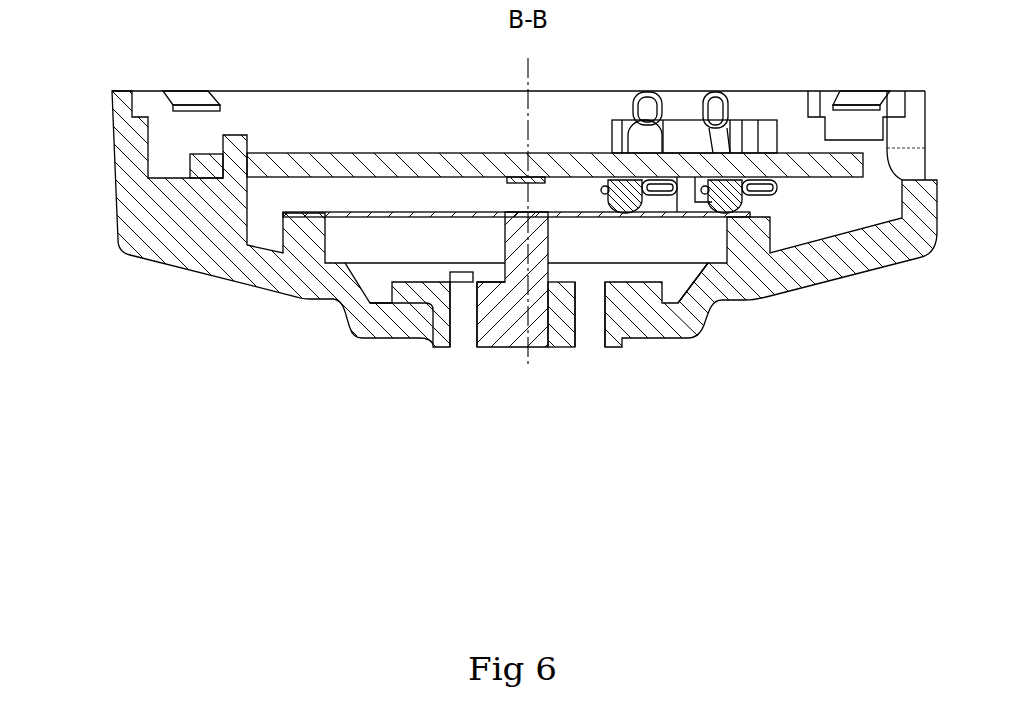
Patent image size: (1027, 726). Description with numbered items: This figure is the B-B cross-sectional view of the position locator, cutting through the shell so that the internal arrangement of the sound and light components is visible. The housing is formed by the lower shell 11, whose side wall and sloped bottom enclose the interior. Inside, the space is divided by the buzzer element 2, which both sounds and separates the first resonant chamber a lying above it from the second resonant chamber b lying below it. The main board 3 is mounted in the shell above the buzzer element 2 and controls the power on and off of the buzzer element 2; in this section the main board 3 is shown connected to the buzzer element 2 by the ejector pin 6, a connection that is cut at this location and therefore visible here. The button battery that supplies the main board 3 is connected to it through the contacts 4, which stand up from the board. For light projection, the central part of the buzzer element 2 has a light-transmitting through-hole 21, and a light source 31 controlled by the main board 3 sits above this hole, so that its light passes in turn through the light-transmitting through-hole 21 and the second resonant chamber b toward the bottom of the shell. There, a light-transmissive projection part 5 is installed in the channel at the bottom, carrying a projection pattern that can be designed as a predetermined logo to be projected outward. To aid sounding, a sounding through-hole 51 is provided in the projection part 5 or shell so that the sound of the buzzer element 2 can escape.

The lower shell 11 is at (140, 193).
The buzzer element 2 is at (403, 216).
The light-transmitting through-hole 21 is at (552, 215).
The main board 3 is at (378, 162).
The light source 31 is at (522, 172).
The contacts 4 is at (651, 90).
The projection part 5 is at (502, 343).
The sounding through-hole 51 is at (583, 330).
The ejector pin 6 is at (723, 202).
The first resonant chamber a is at (855, 205).
The second resonant chamber b is at (678, 273).